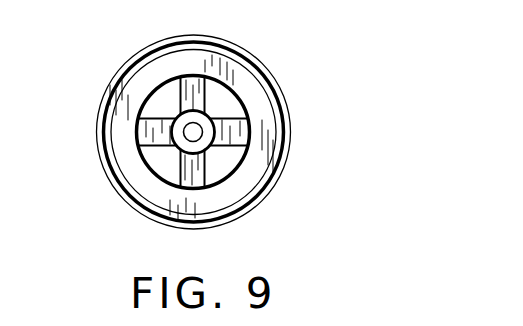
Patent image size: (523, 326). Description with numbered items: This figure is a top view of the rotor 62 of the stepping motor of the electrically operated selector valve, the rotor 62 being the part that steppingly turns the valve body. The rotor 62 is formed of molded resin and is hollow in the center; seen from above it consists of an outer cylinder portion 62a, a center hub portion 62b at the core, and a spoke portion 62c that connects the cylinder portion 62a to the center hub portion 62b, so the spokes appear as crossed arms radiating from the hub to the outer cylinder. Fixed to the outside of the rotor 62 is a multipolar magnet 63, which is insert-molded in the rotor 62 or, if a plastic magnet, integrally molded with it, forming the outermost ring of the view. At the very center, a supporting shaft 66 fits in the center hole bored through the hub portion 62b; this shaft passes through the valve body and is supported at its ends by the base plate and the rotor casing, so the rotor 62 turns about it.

The rotor 62 is at (272, 82).
The outer cylinder portion 62a is at (235, 110).
The center hub portion 62b is at (205, 148).
The spoke portion 62c is at (197, 93).
The multipolar magnet 63 is at (287, 173).
The supporting shaft 66 is at (208, 133).